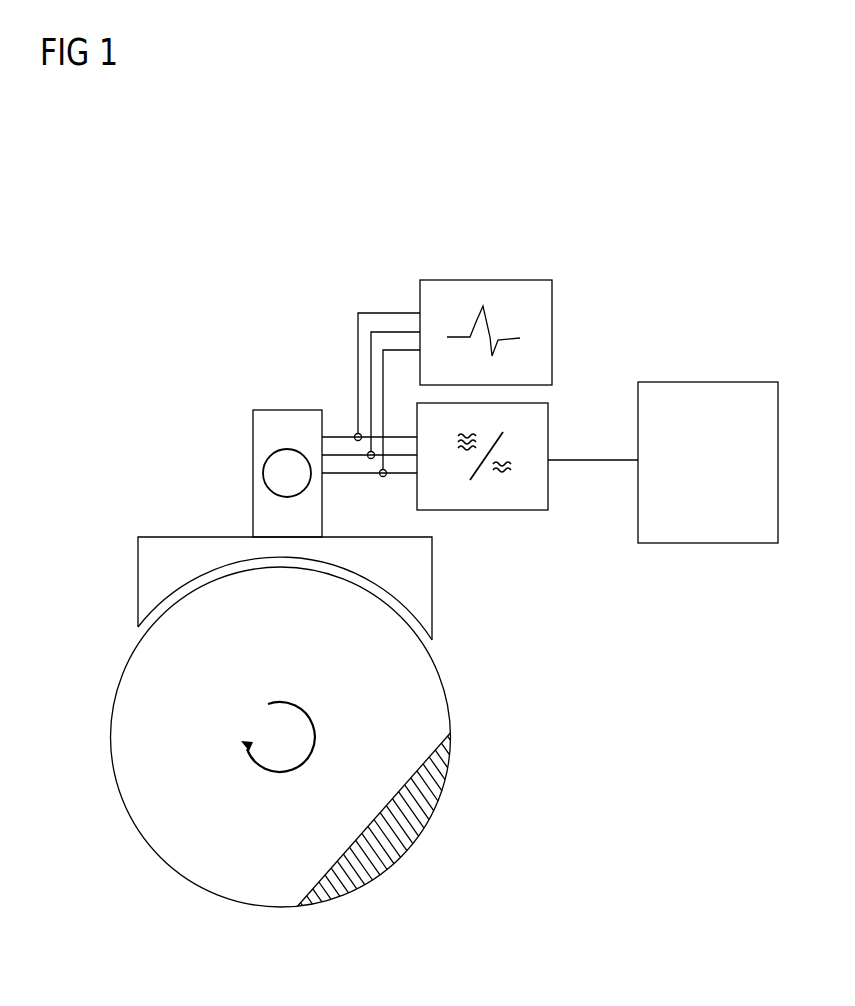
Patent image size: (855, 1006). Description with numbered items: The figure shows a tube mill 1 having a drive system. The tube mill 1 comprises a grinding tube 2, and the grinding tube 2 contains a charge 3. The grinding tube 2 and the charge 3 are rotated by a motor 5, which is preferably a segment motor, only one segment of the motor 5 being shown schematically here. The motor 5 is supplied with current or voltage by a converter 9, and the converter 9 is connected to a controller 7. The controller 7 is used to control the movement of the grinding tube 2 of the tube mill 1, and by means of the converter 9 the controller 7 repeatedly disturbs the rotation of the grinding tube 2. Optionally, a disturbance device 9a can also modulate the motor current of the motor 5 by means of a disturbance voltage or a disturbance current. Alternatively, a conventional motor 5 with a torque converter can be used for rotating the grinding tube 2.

The tube mill 1 is at (220, 270).
The grinding tube 2 is at (263, 893).
The charge 3 is at (387, 867).
The motor 5 is at (260, 470).
The controller 7 is at (712, 532).
The converter 9 is at (483, 497).
The disturbance device 9a is at (485, 290).